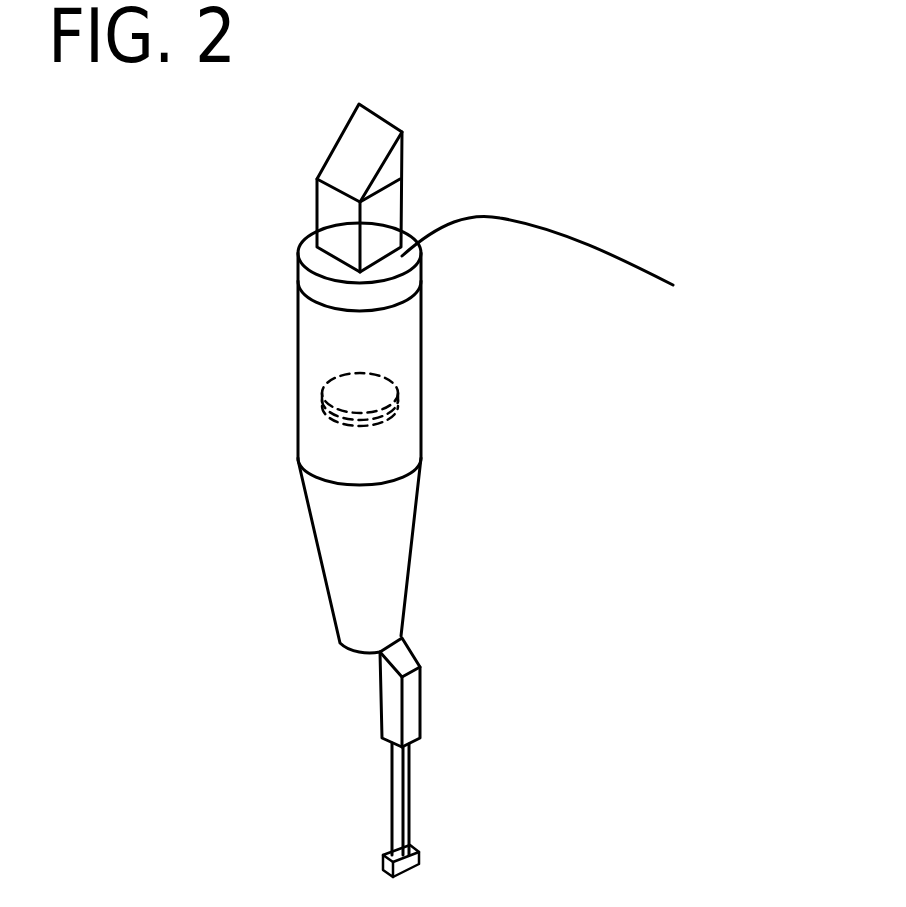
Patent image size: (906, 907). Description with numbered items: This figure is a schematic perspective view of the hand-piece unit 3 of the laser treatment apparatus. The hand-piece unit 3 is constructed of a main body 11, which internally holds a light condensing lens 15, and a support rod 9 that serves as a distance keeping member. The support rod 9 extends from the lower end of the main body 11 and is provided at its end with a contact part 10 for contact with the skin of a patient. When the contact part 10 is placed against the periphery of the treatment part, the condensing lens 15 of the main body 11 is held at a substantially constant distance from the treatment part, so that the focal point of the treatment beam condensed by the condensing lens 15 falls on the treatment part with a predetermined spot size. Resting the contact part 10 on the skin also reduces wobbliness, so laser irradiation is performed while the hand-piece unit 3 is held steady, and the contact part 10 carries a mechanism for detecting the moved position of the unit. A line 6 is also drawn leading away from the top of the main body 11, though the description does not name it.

The hand-piece unit 3 is at (662, 437).
The lead wire 6 is at (637, 270).
The support rod 9 is at (409, 775).
The contact part 10 is at (410, 866).
The main body 11 is at (298, 322).
The light condensing lens 15 is at (324, 394).